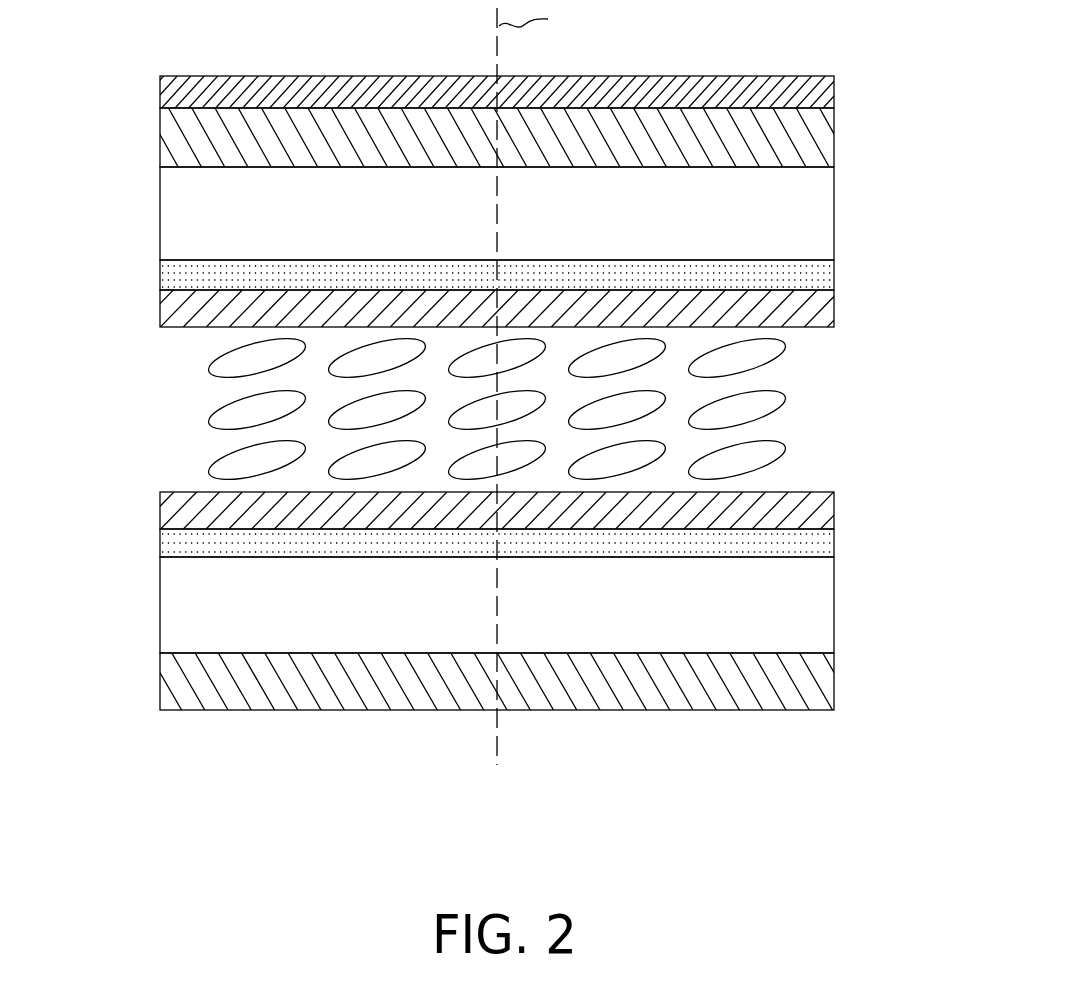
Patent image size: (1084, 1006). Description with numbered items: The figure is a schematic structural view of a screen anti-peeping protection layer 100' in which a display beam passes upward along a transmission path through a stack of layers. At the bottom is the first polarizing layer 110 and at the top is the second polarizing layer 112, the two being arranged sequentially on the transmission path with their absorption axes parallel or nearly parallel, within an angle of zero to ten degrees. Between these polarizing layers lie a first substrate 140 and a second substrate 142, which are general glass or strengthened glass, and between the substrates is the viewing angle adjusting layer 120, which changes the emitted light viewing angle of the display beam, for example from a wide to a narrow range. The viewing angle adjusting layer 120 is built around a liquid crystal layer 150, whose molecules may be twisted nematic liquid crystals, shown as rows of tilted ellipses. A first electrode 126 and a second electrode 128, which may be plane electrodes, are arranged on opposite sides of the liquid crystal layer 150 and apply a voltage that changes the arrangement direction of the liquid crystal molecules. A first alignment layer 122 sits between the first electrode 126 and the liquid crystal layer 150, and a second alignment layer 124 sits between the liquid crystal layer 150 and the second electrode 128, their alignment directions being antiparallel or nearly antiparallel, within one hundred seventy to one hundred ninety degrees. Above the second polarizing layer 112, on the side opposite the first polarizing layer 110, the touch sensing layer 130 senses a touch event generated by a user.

The screen anti-peeping protection layer 100' is at (500, 386).
The first polarizing layer 110 is at (834, 678).
The second polarizing layer 112 is at (834, 137).
The viewing angle adjusting layer 120 is at (500, 410).
The first alignment layer 122 is at (160, 512).
The second alignment layer 124 is at (160, 310).
The first electrode 126 is at (160, 545).
The second electrode 128 is at (160, 273).
The touch sensing layer 130 is at (834, 92).
The first substrate 140 is at (834, 603).
The second substrate 142 is at (834, 213).
The liquid crystal layer 150 is at (150, 420).